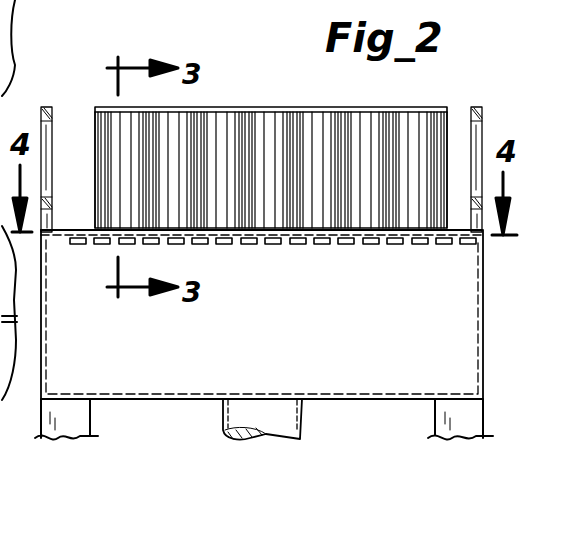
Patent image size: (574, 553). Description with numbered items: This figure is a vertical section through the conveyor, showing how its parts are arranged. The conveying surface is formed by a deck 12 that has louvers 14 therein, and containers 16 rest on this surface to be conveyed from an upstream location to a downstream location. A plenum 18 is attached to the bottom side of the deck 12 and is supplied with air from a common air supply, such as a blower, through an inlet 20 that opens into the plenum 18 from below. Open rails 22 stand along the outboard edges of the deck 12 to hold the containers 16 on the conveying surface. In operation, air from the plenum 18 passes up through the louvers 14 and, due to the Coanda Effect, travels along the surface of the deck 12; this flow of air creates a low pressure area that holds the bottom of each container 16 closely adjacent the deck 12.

The deck 12 is at (78, 228).
The louvers 14 is at (298, 244).
The containers 16 is at (300, 107).
The plenum 18 is at (462, 326).
The inlet 20 is at (302, 418).
The open rails 22 is at (45, 107).